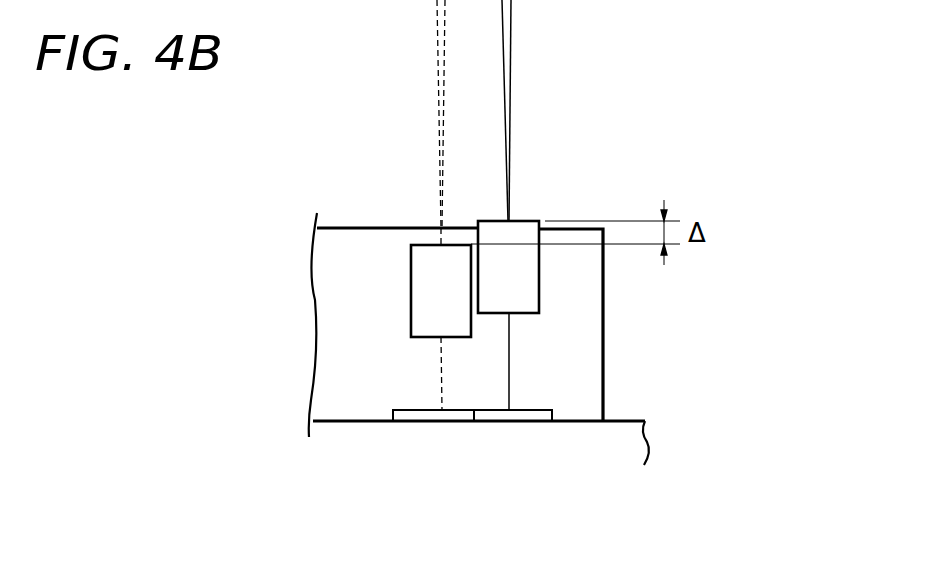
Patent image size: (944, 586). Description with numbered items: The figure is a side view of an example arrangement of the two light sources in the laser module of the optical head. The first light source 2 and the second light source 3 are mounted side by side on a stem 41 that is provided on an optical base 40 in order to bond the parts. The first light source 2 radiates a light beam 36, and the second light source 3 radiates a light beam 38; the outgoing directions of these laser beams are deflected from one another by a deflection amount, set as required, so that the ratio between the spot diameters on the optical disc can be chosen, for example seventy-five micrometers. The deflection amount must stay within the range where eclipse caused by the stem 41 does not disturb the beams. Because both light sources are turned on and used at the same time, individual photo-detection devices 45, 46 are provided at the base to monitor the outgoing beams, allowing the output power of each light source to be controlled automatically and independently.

The first light source 2 is at (490, 218).
The second light source 3 is at (411, 250).
The light beam 36 is at (512, 85).
The light beam 38 is at (437, 85).
The optical base 40 is at (647, 437).
The stem 41 is at (604, 338).
The photo-detection device 45 is at (532, 415).
The photo-detection device 46 is at (417, 414).